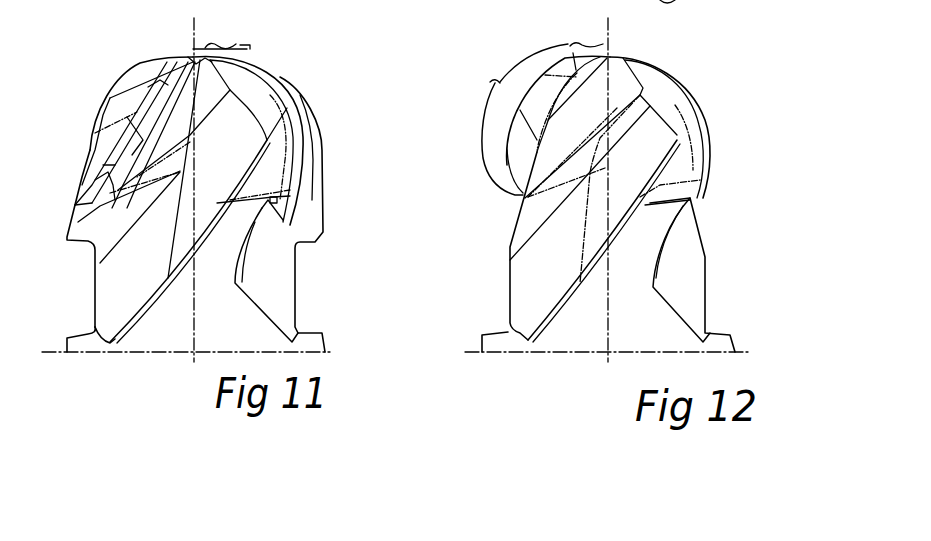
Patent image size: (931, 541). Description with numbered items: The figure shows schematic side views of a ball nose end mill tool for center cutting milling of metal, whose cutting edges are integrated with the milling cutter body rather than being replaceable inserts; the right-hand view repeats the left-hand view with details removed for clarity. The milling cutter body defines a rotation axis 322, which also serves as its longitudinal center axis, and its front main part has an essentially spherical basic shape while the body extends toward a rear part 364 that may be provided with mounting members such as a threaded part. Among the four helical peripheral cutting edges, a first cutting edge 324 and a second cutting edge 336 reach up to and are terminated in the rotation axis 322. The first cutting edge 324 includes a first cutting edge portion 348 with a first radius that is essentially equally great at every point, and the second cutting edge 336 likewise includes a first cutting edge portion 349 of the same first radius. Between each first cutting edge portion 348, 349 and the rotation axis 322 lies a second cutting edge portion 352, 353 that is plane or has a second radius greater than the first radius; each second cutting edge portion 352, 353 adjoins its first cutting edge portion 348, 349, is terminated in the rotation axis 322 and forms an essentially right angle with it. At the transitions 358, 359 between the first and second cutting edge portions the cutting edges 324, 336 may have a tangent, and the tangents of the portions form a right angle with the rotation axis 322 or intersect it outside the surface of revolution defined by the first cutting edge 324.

In FIG. 11, the rotation axis 322 is at (193, 368).
In FIG. 12, the rotation axis 322 is at (605, 330).
In FIG. 11, the first cutting edge 324 is at (300, 127).
In FIG. 12, the first cutting edge 324 is at (697, 92).
In FIG. 12, the second cutting edge 336 is at (507, 152).
In FIG. 11, the first cutting edge portion 348 is at (283, 78).
In FIG. 12, the first cutting edge portion 349 is at (517, 63).
In FIG. 11, the second cutting edge portion 352 is at (212, 42).
In FIG. 12, the second cutting edge portion 353 is at (586, 40).
In FIG. 11, the transition 358 is at (243, 42).
In FIG. 12, the transition 359 is at (565, 46).
In FIG. 11, the rear part 364 is at (310, 340).
In FIG. 12, the rear part 364 is at (710, 343).